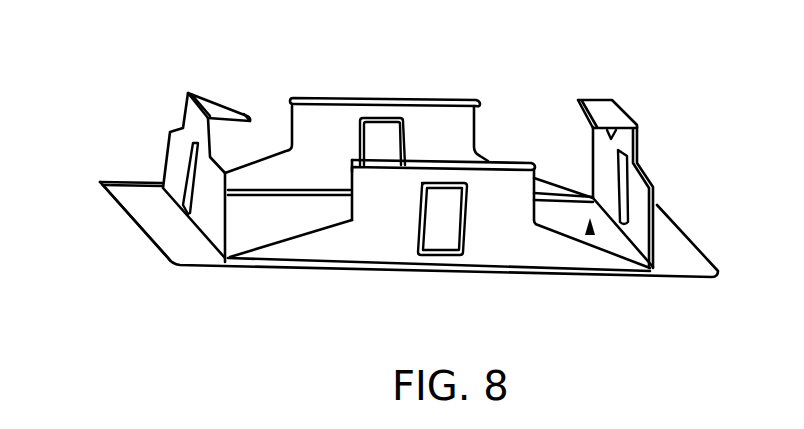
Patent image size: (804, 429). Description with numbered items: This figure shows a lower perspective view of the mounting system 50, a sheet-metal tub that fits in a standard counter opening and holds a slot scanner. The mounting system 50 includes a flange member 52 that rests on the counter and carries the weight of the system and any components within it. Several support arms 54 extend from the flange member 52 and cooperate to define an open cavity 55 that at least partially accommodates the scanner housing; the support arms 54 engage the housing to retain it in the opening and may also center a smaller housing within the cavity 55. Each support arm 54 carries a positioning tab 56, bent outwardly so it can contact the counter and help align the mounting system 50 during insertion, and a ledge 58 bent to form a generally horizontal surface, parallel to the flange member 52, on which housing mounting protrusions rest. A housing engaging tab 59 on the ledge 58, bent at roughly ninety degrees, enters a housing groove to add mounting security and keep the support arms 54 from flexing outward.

The mounting system 50 is at (128, 36).
The flange member 52 is at (190, 250).
The support arms 54 is at (178, 135).
The open cavity 55 is at (591, 238).
The positioning tab 56 is at (188, 170).
The ledge 58 is at (210, 97).
The housing engaging tab 59 is at (253, 117).